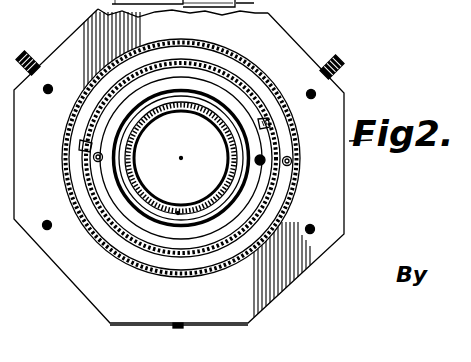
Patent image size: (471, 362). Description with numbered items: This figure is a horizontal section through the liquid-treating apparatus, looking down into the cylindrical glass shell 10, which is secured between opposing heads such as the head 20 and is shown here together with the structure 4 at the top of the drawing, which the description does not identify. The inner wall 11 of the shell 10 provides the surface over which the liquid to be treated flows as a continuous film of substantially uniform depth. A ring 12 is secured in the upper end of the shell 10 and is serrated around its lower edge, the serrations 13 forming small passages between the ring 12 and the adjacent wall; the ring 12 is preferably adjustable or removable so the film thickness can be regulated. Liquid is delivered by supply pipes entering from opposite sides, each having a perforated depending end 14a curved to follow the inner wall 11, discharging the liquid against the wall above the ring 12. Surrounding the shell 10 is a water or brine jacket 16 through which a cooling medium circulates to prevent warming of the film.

The head 20 is at (64, 47).
The camera body 4 is at (272, 12).
The water or brine jacket 16 is at (147, 274).
The ring 12 is at (192, 67).
The cylindrical glass shell 10 is at (232, 68).
The serrations 13 is at (86, 147).
The inner wall 11 is at (266, 122).
The depending end 14a is at (82, 176).